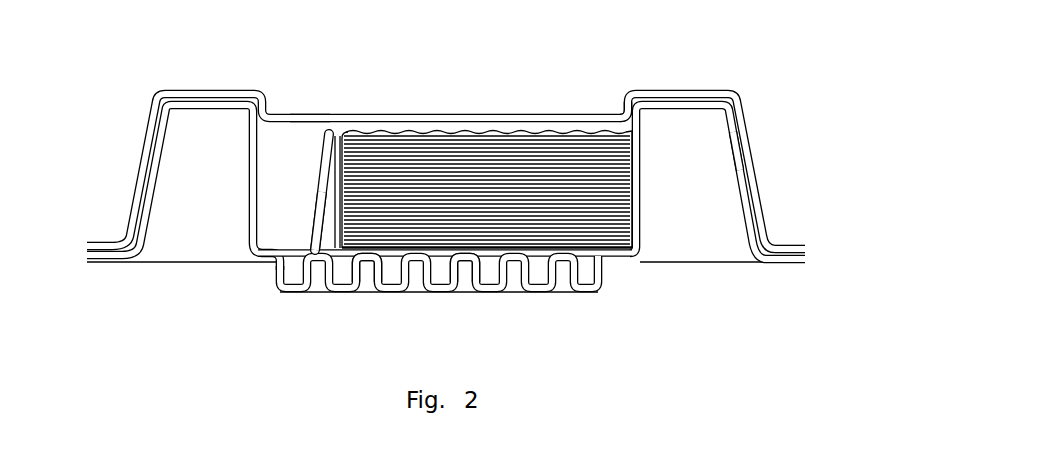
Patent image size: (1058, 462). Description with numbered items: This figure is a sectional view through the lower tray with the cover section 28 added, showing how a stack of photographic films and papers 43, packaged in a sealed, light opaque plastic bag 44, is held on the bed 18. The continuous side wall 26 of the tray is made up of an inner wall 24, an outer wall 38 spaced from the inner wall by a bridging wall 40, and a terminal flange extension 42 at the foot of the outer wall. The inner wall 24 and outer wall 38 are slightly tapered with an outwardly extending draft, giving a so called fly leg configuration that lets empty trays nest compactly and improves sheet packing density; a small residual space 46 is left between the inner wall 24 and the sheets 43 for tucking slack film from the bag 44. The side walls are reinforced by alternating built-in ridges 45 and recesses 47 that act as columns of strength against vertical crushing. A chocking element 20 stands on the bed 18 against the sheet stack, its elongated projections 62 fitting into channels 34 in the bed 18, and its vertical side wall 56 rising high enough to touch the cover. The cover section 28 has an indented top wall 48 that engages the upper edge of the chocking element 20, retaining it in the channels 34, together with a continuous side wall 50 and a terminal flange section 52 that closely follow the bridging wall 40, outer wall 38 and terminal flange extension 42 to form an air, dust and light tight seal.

The bed 18 is at (533, 256).
The chocking element 20 is at (312, 124).
The inner wall 24 is at (654, 241).
The side wall 26 is at (730, 187).
The cover section 28 is at (686, 86).
The channels 34 is at (342, 272).
The outer wall 38 is at (155, 182).
The bridging wall 40 is at (192, 110).
The terminal flange extension 42 is at (103, 263).
The photographic films and papers 43 is at (482, 185).
The plastic bag 44 is at (428, 130).
The ridges 45 is at (248, 203).
The residual space 46 is at (629, 122).
The recesses 47 is at (241, 240).
The indented top wall 48 is at (334, 128).
The continuous side wall 50 is at (143, 157).
The terminal flange section 52 is at (103, 243).
The first vertical side wall 56 is at (320, 165).
The elongated projections 62 is at (384, 263).